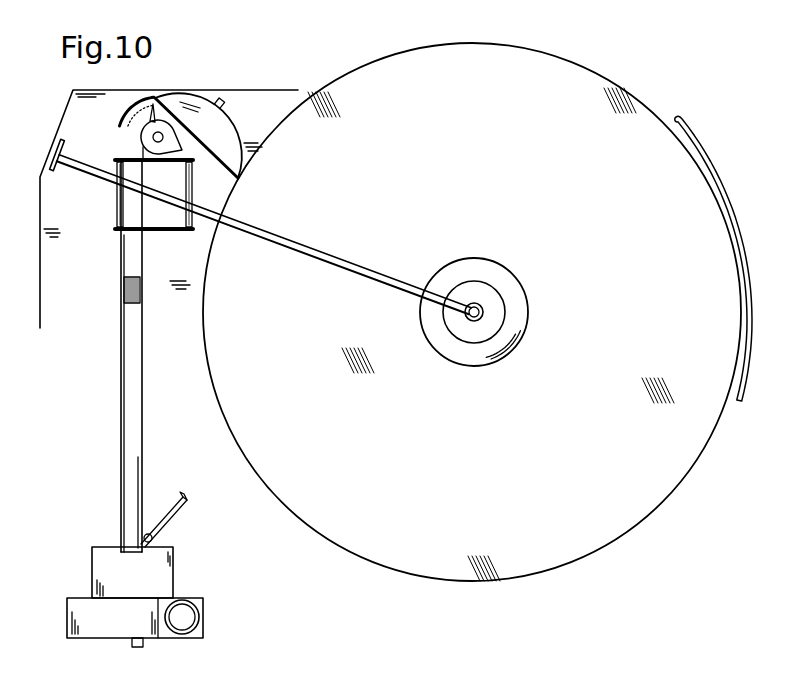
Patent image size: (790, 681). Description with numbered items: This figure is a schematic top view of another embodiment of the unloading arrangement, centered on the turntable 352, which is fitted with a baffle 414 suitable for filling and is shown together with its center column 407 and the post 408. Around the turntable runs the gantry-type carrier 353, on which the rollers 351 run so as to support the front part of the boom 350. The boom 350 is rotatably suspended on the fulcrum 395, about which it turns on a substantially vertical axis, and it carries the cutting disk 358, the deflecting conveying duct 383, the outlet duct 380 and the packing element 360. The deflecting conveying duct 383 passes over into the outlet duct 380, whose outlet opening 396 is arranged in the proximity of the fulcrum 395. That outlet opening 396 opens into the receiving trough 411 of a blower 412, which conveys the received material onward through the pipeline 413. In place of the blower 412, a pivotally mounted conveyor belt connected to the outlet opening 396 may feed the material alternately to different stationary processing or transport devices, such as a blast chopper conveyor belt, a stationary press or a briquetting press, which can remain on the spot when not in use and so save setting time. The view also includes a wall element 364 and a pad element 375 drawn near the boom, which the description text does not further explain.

The boom 350 is at (117, 393).
The rollers 351 is at (117, 211).
The turntable 352 is at (495, 147).
The gantry-type carrier 353 is at (323, 261).
The cutting disk 358 is at (228, 140).
The packing element 360 is at (139, 297).
The housing wall 364 is at (88, 310).
The stop pad 375 is at (58, 173).
The outlet duct 380 is at (136, 434).
The deflecting conveying duct 383 is at (120, 129).
The fulcrum 395 is at (143, 546).
The outlet opening 396 is at (130, 548).
The center column 407 is at (455, 320).
The post 408 is at (485, 313).
The receiving trough 411 is at (134, 585).
The blower 412 is at (188, 583).
The pipeline 413 is at (197, 621).
The baffle 414 is at (690, 138).